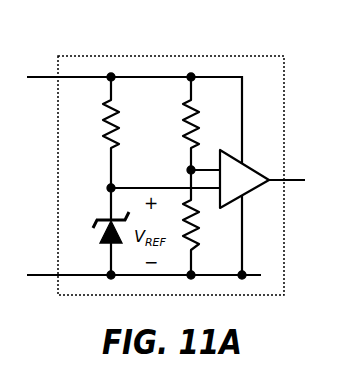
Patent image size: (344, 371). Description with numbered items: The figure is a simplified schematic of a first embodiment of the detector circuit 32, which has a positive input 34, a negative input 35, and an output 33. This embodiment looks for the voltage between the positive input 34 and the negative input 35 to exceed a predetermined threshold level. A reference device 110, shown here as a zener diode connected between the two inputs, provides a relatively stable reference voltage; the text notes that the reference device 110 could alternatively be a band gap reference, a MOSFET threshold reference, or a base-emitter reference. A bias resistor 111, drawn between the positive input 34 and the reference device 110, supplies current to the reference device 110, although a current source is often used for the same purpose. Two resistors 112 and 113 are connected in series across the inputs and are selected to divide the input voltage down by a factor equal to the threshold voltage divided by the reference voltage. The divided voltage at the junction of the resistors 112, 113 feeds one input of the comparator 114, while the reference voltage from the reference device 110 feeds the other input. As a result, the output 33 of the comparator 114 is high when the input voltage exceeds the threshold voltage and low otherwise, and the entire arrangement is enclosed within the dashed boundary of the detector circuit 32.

The detector circuit 32 is at (170, 55).
The output 33 is at (293, 177).
The positive input 34 is at (40, 76).
The negative input 35 is at (40, 274).
The reference device 110 is at (99, 219).
The bias resistor 111 is at (124, 128).
The resistor 112 is at (179, 136).
The resistor 113 is at (205, 232).
The comparator 114 is at (253, 166).